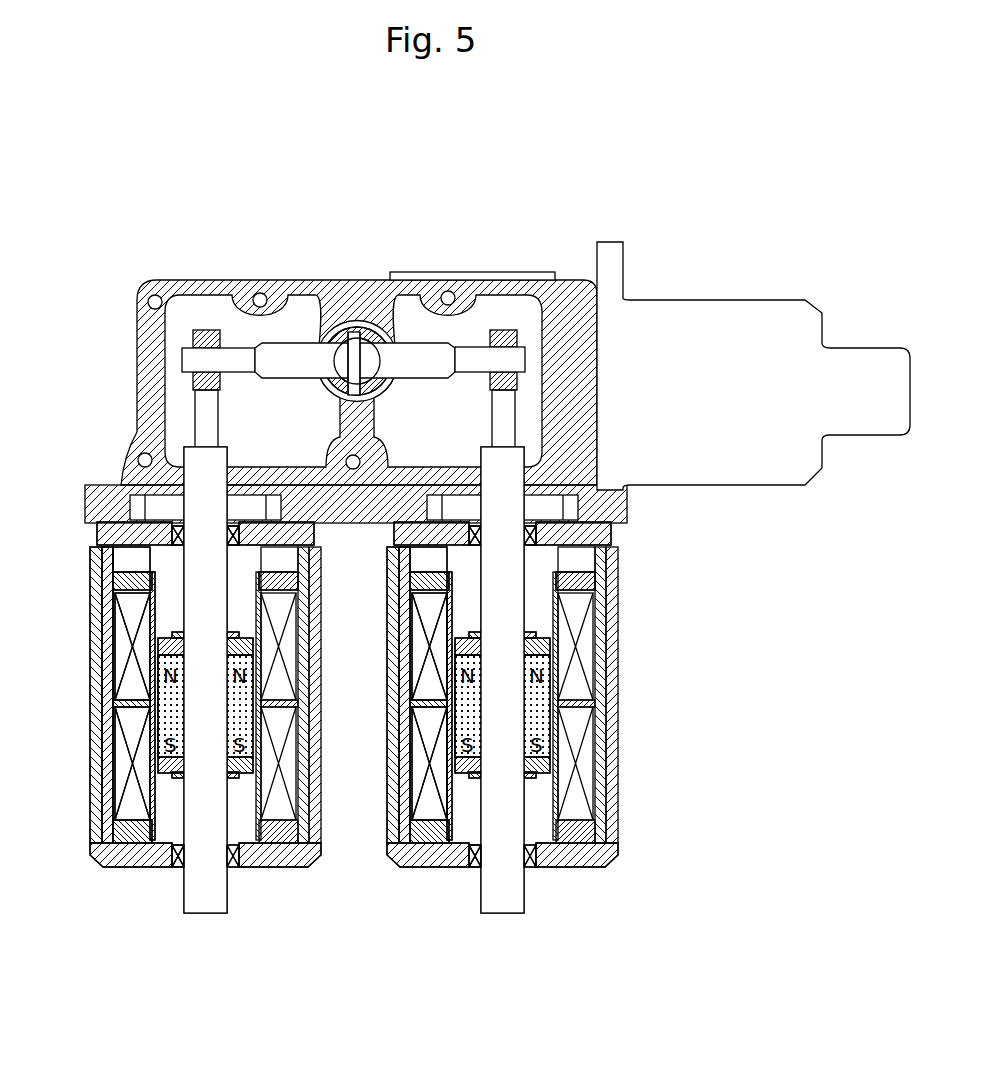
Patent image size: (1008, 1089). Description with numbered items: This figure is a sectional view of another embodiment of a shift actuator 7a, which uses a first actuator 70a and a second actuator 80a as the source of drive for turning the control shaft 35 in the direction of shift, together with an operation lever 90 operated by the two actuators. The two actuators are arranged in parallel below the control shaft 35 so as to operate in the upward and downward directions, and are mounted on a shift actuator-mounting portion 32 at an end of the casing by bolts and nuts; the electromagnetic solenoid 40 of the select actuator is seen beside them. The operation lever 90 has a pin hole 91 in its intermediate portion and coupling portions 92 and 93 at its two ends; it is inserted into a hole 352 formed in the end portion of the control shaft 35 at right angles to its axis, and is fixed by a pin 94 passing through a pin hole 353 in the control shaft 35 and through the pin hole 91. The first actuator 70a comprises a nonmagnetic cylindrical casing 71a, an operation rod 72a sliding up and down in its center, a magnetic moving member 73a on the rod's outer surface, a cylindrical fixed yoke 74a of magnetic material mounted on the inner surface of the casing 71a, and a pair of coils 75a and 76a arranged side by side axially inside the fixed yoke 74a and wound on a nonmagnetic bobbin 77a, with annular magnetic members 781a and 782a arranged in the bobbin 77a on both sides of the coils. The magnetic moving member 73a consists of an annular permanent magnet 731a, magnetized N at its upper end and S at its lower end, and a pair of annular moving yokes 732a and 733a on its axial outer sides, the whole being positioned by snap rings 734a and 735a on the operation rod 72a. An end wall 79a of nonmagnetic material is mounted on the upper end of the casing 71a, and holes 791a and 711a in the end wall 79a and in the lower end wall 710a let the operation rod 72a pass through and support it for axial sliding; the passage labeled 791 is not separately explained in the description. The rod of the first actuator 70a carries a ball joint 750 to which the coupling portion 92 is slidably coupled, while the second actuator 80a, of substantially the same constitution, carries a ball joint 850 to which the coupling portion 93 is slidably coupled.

The shift actuator 7a is at (485, 195).
The coupling portion 93 is at (233, 350).
The operation lever 90 is at (292, 332).
The control shaft 35 is at (350, 337).
The pin 94 is at (354, 333).
The pin hole 353 is at (368, 345).
The hole 352 is at (373, 352).
The coupling portion 92 is at (470, 350).
The ball joint 750 is at (503, 331).
The electromagnetic solenoid 40 is at (782, 282).
The ball joint 850 is at (192, 337).
The shift actuator-mounting portion 32 is at (94, 485).
The pin hole 91 is at (347, 371).
The bushing 791 is at (234, 527).
The hole 791a is at (528, 527).
The end wall 79a is at (612, 540).
The magnetic member 781a is at (597, 582).
The snap ring 734a is at (530, 630).
The moving yoke 732a is at (547, 648).
The permanent magnet 731a is at (547, 693).
The moving yoke 733a is at (547, 765).
The snap ring 735a is at (536, 776).
The coil 75a is at (422, 630).
The fixed yoke 74a is at (415, 660).
The bobbin 77a is at (409, 705).
The coil 76a is at (425, 770).
The casing 71a is at (391, 815).
The magnetic member 782a is at (418, 835).
The magnetic moving member 73a is at (464, 795).
The hole 711a is at (475, 868).
The operation rod 72a is at (509, 906).
The lower end wall 710a is at (574, 868).
The second actuator 80a is at (165, 978).
The first actuator 70a is at (578, 962).